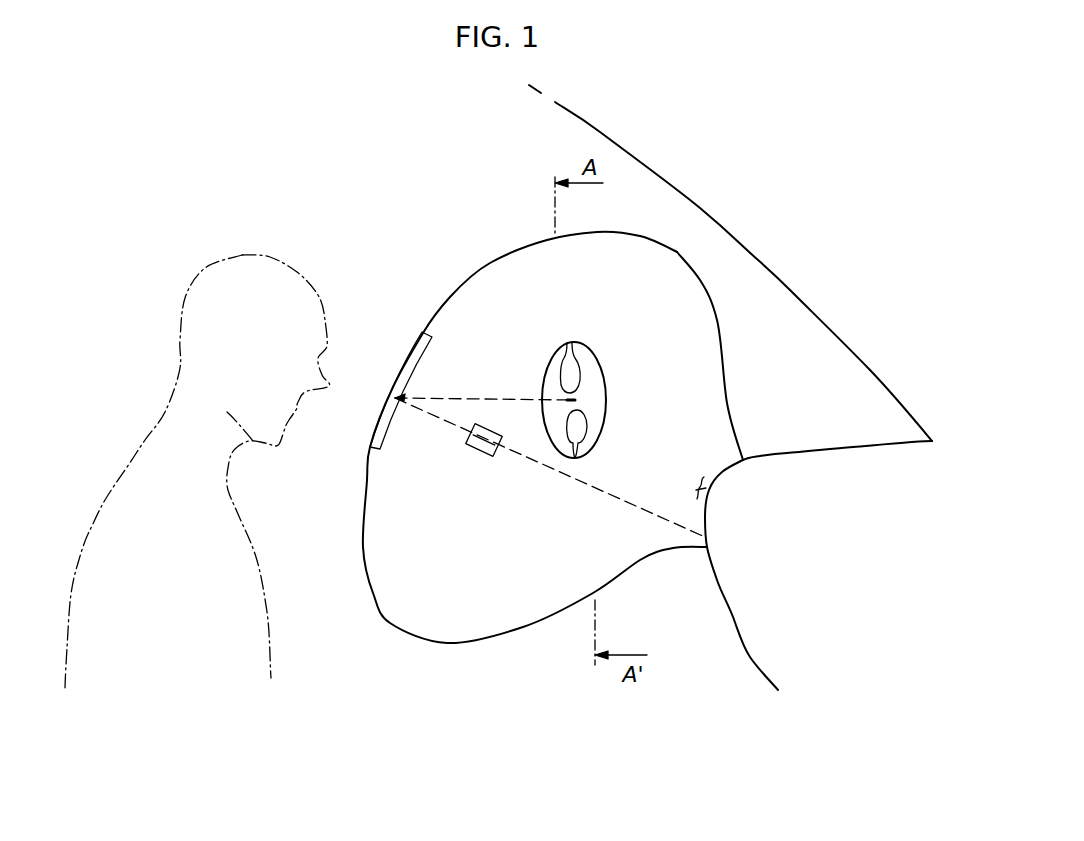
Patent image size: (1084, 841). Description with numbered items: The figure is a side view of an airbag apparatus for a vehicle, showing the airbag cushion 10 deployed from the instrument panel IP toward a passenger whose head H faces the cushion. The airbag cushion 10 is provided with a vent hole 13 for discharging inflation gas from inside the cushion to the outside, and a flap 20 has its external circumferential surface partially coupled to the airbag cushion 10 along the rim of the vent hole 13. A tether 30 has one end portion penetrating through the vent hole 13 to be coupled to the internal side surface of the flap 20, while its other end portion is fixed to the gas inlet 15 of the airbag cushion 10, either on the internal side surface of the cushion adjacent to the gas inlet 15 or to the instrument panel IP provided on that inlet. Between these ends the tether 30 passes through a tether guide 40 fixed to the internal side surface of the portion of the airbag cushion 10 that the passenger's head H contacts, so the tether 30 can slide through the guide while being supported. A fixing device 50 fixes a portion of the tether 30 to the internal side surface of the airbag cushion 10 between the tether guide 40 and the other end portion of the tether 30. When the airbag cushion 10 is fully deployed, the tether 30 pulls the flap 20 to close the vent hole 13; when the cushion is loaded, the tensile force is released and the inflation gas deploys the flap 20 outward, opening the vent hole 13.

The airbag cushion 10 is at (677, 252).
The vent hole 13 is at (553, 355).
The gas inlet 15 is at (710, 492).
The flap 20 is at (590, 363).
The tether 30 is at (553, 468).
The tether guide 40 is at (407, 355).
The fixing device 50 is at (477, 452).
The passenger's head H is at (197, 472).
The instrument panel IP is at (743, 648).